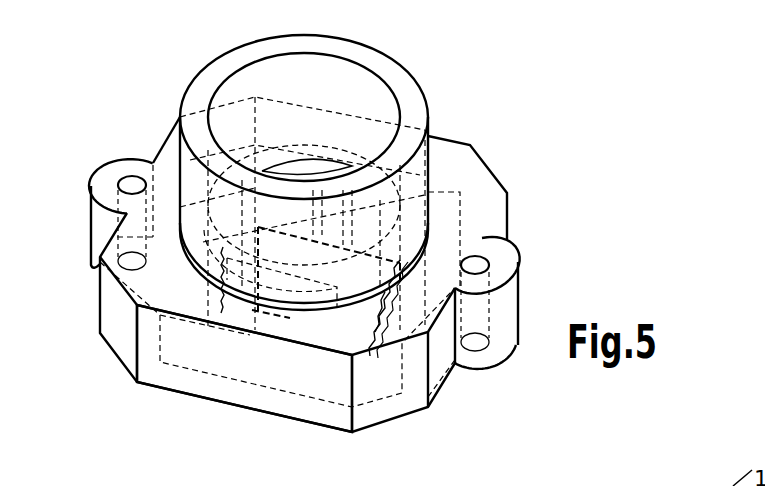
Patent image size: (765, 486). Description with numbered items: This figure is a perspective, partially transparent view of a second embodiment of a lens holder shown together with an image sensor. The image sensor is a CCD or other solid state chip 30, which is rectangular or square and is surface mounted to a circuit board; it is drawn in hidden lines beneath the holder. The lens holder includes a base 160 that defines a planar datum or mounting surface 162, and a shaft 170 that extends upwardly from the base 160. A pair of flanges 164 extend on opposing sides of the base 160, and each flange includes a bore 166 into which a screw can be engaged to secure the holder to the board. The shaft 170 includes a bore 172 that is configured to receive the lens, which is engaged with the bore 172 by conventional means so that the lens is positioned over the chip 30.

The chip 30 is at (327, 327).
The base 160 is at (412, 400).
The mounting surface 162 is at (183, 392).
The flanges 164 is at (92, 228).
The bores 166 is at (129, 184).
The shaft 170 is at (428, 118).
The bore 172 is at (347, 102).